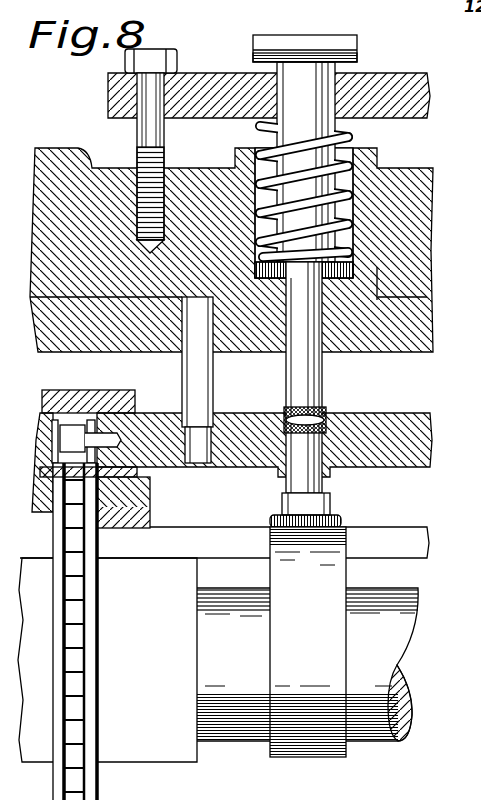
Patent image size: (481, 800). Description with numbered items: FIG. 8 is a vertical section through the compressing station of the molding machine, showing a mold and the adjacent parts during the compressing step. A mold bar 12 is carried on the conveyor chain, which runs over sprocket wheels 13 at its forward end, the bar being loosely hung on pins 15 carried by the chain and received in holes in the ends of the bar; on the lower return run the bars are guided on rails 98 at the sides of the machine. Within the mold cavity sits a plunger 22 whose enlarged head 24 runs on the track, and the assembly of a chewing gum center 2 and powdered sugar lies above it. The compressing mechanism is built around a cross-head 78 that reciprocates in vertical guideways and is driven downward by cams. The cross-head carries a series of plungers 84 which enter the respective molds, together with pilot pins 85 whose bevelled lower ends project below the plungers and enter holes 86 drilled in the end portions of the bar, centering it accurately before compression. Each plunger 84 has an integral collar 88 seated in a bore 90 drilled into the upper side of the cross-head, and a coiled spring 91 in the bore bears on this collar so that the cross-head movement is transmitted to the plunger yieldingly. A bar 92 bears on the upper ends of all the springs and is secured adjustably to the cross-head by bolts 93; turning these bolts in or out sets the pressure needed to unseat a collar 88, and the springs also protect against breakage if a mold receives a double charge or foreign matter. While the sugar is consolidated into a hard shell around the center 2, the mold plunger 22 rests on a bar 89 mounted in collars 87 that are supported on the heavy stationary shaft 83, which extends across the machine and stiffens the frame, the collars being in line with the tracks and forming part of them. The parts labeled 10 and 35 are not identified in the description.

The chewing gum center 2 is at (321, 402).
The guide rail 10 is at (56, 531).
The mold bar 12 is at (397, 418).
The sprocket wheel 13 is at (70, 558).
The pin 15 is at (110, 438).
The plunger 22 is at (297, 485).
The head 24 is at (341, 521).
The adjusting nut 35 is at (262, 43).
The cross-head 78 is at (418, 197).
The stationary shaft 83 is at (235, 740).
The plunger 84 is at (286, 378).
The pilot pin 85 is at (183, 393).
The hole 86 is at (200, 462).
The collar 87 is at (318, 758).
The collar 88 is at (355, 267).
The bar 89 is at (413, 553).
The bore 90 is at (350, 182).
The coiled spring 91 is at (237, 160).
The bar 92 is at (412, 91).
The bolt 93 is at (137, 135).
The rail 98 is at (294, 131).